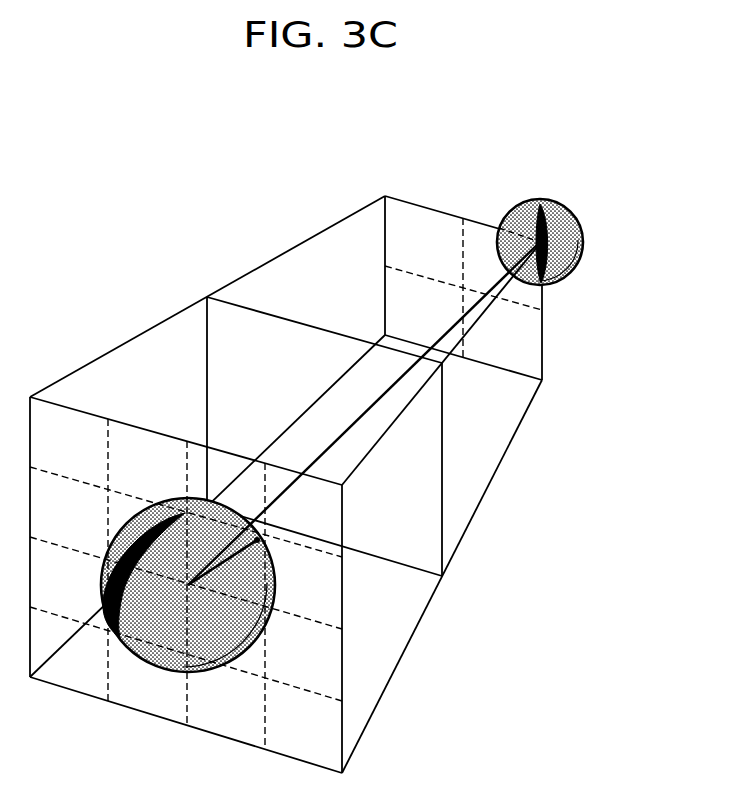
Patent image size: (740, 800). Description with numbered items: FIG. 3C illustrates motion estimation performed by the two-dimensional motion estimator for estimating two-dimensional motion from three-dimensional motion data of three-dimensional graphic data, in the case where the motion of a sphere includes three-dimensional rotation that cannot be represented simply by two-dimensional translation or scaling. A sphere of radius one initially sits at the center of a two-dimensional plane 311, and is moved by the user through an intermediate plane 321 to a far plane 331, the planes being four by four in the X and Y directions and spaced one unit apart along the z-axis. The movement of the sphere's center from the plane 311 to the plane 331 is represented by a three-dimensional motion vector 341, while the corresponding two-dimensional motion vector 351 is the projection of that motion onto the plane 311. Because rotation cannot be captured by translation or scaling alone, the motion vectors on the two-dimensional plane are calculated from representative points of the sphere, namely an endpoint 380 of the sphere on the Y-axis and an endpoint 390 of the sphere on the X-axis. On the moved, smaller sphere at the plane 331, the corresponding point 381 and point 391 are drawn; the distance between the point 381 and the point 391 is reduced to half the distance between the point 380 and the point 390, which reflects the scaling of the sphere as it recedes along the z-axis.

The 2D plane 311 is at (62, 406).
The plane 321 is at (233, 303).
The plane 331 is at (412, 202).
The 3D motion vector 341 is at (350, 428).
The 2D motion vector 351 is at (240, 552).
The endpoint of the sphere on the Y-axis 380 is at (185, 512).
The endpoint of the sphere on the X-axis 390 is at (266, 608).
The point 381 is at (541, 203).
The point 391 is at (583, 253).